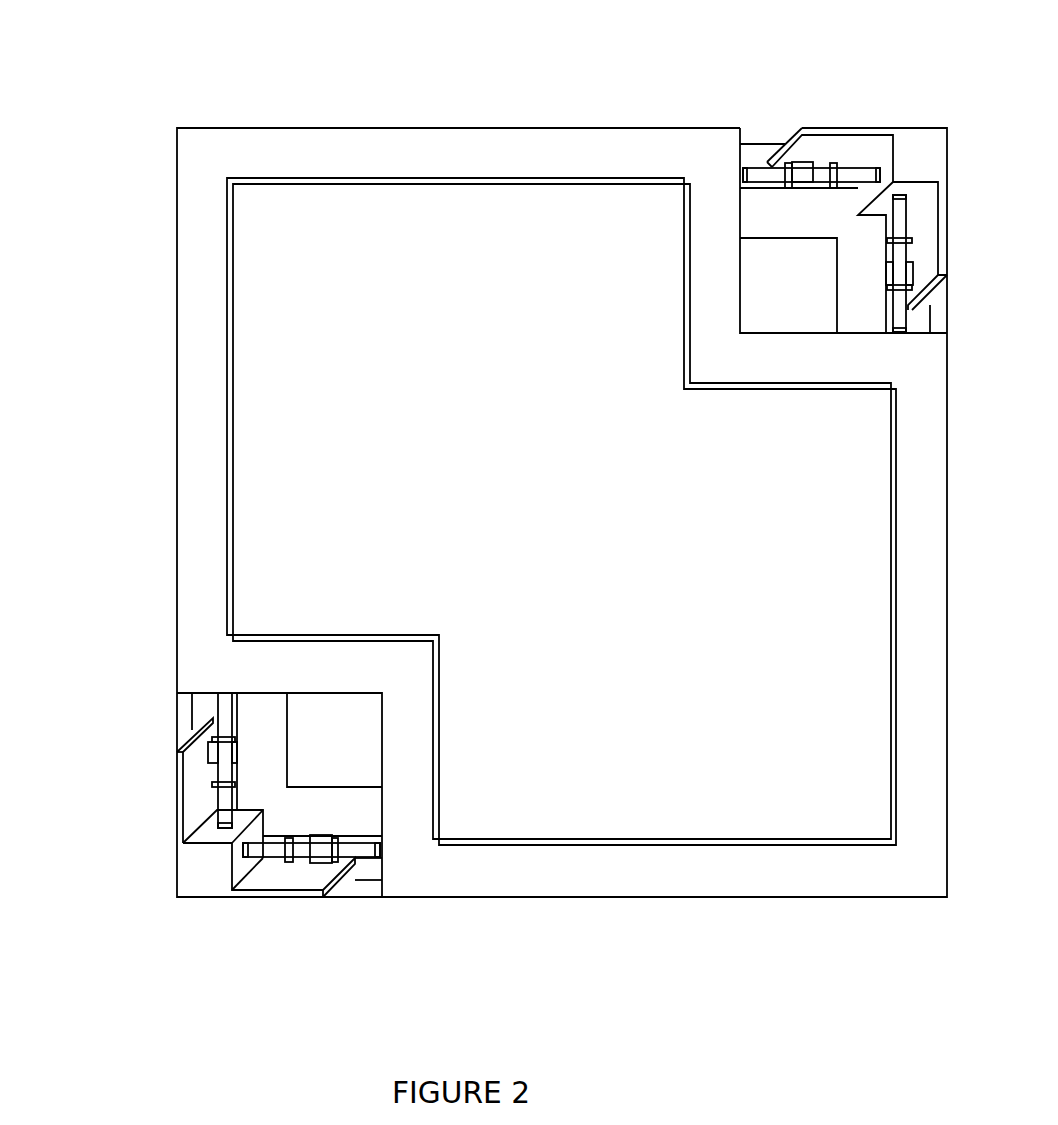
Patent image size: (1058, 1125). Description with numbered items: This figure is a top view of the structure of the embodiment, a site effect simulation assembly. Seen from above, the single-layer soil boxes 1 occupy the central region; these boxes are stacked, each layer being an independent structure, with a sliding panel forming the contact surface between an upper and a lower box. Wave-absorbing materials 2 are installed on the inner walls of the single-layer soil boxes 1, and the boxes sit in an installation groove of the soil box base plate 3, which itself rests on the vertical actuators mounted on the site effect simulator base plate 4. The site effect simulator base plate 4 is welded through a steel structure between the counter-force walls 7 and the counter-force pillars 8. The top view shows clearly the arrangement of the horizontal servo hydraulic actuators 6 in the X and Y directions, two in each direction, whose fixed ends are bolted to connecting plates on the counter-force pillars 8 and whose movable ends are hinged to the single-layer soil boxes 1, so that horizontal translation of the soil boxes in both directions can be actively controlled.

The single-layer soil box 1 is at (200, 361).
The wave-absorbing materials 2 is at (313, 190).
The soil box base plate 3 is at (418, 461).
The site effect simulator base plate 4 is at (349, 728).
The horizontal servo hydraulic actuators 6 is at (771, 177).
The counter-force walls 7 is at (178, 790).
The counter-force pillars 8 is at (203, 870).